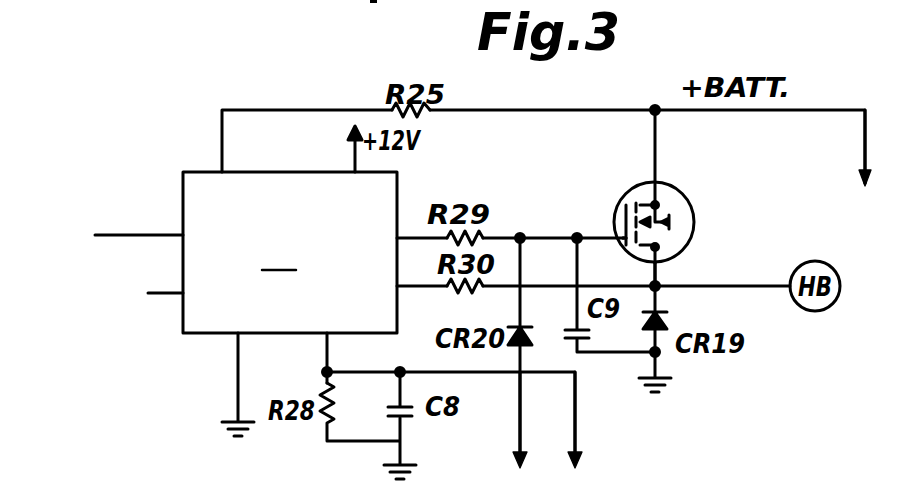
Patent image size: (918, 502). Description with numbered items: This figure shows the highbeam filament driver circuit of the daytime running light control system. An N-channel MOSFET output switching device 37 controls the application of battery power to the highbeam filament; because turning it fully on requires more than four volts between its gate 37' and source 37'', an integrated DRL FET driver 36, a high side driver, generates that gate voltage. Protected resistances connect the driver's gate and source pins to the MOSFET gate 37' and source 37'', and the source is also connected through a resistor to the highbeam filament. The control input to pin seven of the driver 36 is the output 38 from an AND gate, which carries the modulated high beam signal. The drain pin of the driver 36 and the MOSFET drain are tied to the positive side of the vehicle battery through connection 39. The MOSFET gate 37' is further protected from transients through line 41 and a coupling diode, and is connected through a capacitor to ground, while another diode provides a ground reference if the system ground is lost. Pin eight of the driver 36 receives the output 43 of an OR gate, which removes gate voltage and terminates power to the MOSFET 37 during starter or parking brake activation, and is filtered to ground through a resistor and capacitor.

The integrated DRL FET driver 36 is at (178, 312).
The MOSFET output switching device 37 is at (686, 186).
The gate terminal of the MOSFET 37' is at (592, 210).
The source terminal of the MOSFET 37'' is at (711, 265).
The output from AND gate A1 38 is at (124, 234).
The connection to positive side of vehicle battery 39 is at (891, 98).
The line to coupling diode CR20 41 is at (516, 420).
The output of OR gate A2 43 is at (578, 420).